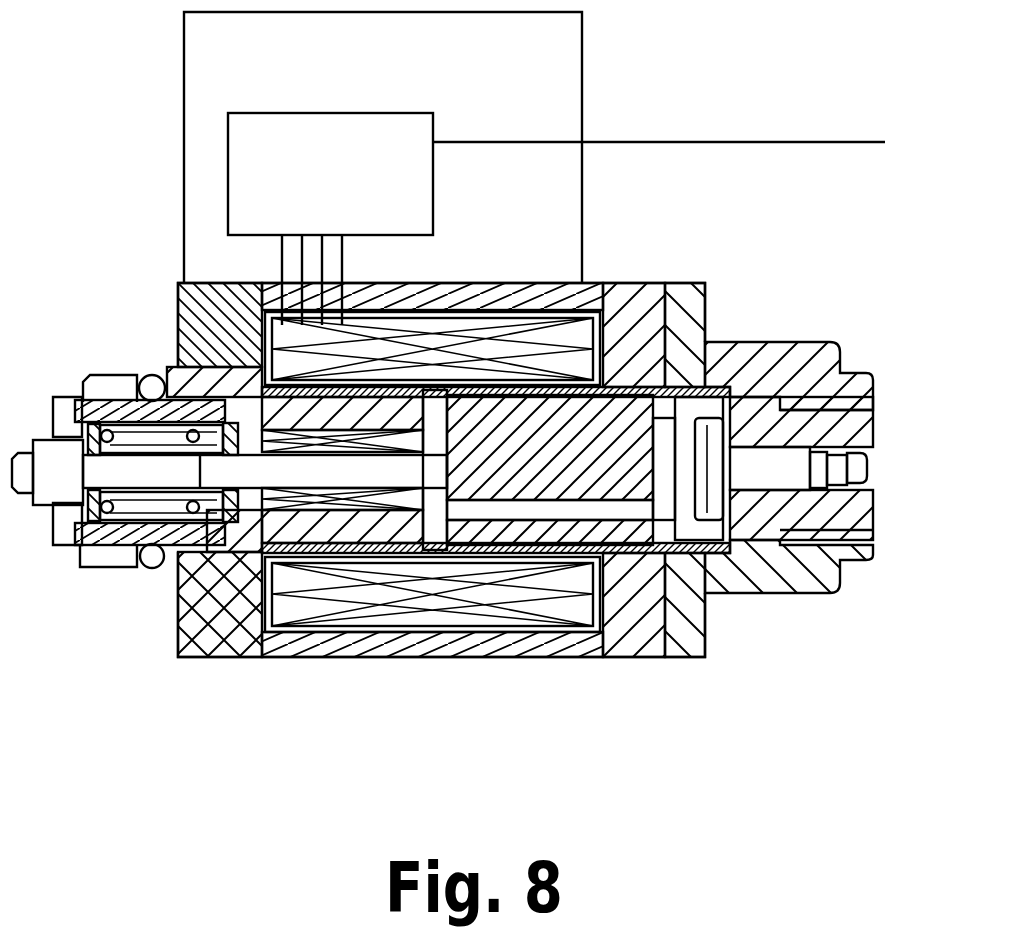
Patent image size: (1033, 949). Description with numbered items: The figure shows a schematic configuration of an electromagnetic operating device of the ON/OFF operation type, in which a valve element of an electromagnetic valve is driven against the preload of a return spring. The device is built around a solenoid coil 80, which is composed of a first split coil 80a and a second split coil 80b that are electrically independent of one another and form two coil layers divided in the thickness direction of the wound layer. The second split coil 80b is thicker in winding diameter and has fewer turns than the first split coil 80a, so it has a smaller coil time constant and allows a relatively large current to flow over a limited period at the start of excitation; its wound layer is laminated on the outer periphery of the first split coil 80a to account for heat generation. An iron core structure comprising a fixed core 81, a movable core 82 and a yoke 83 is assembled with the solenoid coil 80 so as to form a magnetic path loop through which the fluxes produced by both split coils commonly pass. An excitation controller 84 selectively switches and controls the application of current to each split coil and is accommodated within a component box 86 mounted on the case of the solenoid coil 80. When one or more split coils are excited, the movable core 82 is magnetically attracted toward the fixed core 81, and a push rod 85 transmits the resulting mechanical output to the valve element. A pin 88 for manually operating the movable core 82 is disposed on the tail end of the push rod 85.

The solenoid coil 80 is at (588, 285).
The first split coil 80a is at (213, 657).
The second split coil 80b is at (295, 615).
The fixed core 81 is at (170, 565).
The movable core 82 is at (713, 324).
The yoke 83 is at (640, 657).
The excitation controller 84 is at (358, 138).
The push rod 85 is at (223, 470).
The component box 86 is at (184, 135).
The pin 88 is at (762, 593).